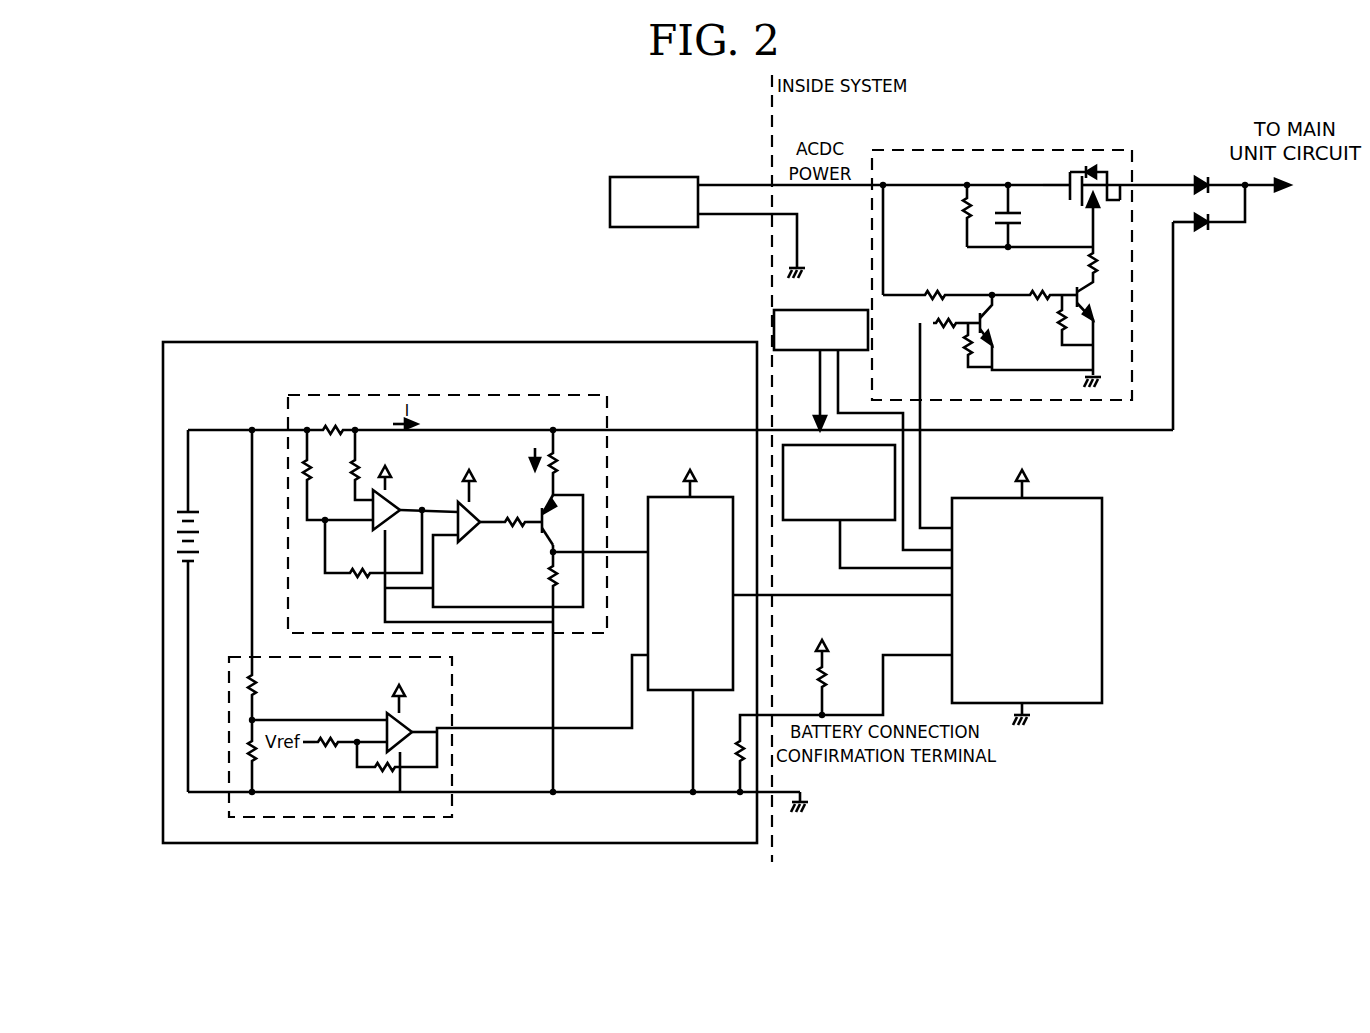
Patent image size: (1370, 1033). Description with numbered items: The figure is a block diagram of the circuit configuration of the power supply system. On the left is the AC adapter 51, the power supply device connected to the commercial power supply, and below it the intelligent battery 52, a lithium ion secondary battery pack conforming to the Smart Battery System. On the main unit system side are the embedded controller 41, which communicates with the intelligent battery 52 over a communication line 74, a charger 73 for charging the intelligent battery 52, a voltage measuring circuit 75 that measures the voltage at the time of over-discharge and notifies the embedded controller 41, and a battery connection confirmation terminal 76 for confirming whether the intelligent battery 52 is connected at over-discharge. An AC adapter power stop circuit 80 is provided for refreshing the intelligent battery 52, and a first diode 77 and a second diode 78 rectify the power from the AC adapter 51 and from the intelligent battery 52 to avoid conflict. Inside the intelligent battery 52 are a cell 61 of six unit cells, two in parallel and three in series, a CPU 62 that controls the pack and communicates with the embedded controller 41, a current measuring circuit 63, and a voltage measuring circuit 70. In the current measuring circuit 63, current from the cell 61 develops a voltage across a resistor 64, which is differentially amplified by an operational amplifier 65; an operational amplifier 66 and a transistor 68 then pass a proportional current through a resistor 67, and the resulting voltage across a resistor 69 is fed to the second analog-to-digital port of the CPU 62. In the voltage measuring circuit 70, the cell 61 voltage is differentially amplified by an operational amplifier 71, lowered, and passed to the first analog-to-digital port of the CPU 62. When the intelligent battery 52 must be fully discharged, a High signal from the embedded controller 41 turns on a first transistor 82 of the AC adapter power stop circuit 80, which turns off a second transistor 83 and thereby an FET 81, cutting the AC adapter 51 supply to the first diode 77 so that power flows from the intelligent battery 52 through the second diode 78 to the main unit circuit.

The embedded controller 41 is at (1104, 600).
The AC adapter 51 is at (656, 229).
The intelligent battery 52 is at (500, 342).
The cell 61 is at (208, 562).
The CPU 62 is at (663, 692).
The current measuring circuit 63 is at (561, 388).
The resistor (RS) 64 is at (317, 425).
The operational amplifier (AMP1) 65 is at (391, 503).
The operational amplifier (AMP2) 66 is at (474, 528).
The resistor (R1) 67 is at (560, 450).
The transistor 68 is at (566, 517).
The resistor (R2) 69 is at (560, 578).
The voltage measuring circuit 70 is at (453, 806).
The operational amplifier (AMP3) 71 is at (393, 717).
The charger 73 is at (805, 353).
The communication line 74 is at (910, 600).
The voltage measuring circuit 75 is at (824, 521).
The battery connection confirmation terminal 76 is at (838, 673).
The first diode (D1) 77 is at (1190, 180).
The second diode (D2) 78 is at (1210, 226).
The AC adapter power stop circuit 80 is at (1093, 138).
The FET (FET1) 81 is at (1118, 212).
The first transistor (TR1) 82 is at (1005, 332).
The second transistor (TR2) 83 is at (1110, 322).